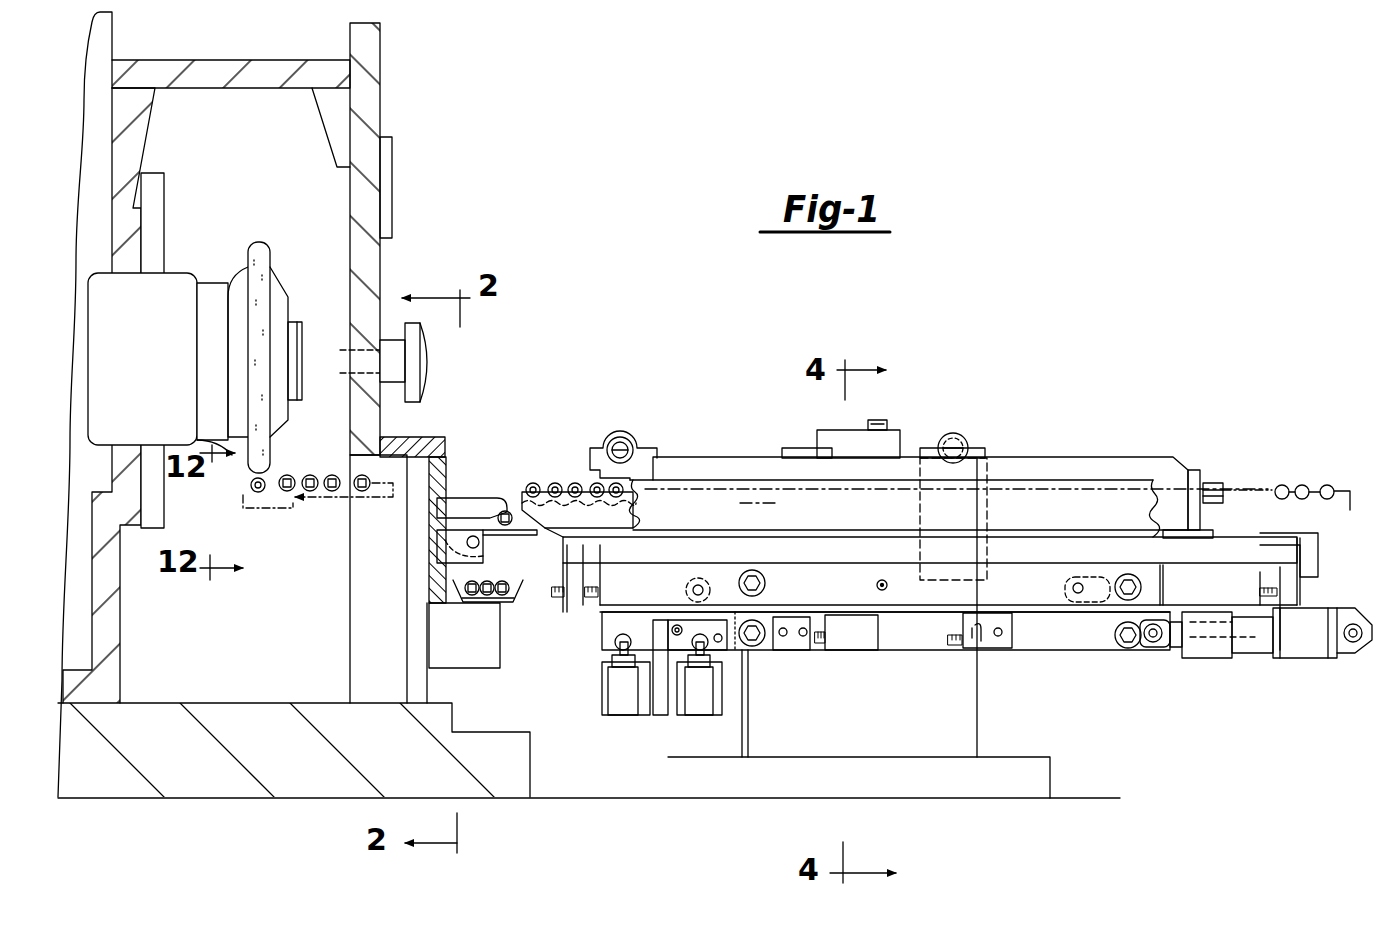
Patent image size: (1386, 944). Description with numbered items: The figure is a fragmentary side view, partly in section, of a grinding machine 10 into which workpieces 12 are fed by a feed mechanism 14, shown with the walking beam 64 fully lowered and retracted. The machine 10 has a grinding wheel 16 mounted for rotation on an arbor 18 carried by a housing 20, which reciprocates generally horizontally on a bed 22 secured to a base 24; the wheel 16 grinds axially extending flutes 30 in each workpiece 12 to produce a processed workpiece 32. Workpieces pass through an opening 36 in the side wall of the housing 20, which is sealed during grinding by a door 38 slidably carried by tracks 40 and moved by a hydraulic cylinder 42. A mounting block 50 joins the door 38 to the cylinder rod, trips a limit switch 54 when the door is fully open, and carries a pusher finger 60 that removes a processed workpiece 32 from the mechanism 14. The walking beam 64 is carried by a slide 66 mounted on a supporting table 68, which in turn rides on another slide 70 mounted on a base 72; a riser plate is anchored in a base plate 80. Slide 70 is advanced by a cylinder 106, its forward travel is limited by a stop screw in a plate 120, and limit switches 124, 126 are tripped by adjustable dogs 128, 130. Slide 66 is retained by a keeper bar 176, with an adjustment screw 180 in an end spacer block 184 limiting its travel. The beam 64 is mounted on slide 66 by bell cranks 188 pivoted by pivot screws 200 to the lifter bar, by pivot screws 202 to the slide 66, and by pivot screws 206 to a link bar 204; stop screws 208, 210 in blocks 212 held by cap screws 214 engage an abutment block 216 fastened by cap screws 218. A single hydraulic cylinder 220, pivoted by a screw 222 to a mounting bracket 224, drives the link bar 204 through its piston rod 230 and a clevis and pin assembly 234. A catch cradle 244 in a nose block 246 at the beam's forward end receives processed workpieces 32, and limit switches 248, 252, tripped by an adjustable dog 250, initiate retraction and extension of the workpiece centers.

The grinding machine 10 is at (425, 71).
The workpiece 12 is at (536, 483).
The feed mechanism 14 is at (960, 413).
The grinding wheel 16 is at (260, 243).
The arbor 18 is at (303, 326).
The housing 20 is at (215, 62).
The bed 22 is at (548, 770).
The base 24 is at (1118, 781).
The flutes 30 is at (280, 460).
The processed workpiece 32 is at (285, 461).
The opening 36 is at (418, 438).
The door 38 is at (458, 456).
The tracks 40 is at (462, 445).
The hydraulic cylinder 42 is at (496, 541).
The mounting block 50 is at (423, 568).
The limit switch 54 is at (497, 660).
The pusher finger 60 is at (478, 500).
The walking beam 64 is at (1355, 499).
The slide 66 is at (1169, 588).
The supporting table 68 is at (1320, 556).
The slide 70 is at (1084, 453).
The base 72 is at (740, 746).
The base plate 80 is at (1054, 772).
The cylinder 106 is at (1315, 535).
The plate 120 is at (1196, 468).
The limit switch 124 is at (624, 437).
The limit switch 126 is at (987, 452).
The adjustable dog 128 is at (790, 448).
The adjustable dog 130 is at (937, 447).
The keeper bar 176 is at (867, 593).
The adjustment screw 180 is at (1310, 592).
The end spacer block 184 is at (1305, 633).
The bell crank 188 is at (766, 590).
The pivot screw 200 is at (686, 590).
The pivot screw 202 is at (762, 571).
The link bar 204 is at (607, 622).
The pivot screw 206 is at (761, 650).
The adjustable stop screw 208 is at (820, 648).
The adjustable stop screw 210 is at (948, 640).
The block 212 is at (790, 648).
The cap screw 214 is at (975, 651).
The abutment block 216 is at (866, 643).
The cap screw 218 is at (890, 560).
The hydraulic cylinder 220 is at (1262, 654).
The screw 222 is at (1356, 642).
The mounting bracket 224 is at (1328, 607).
The piston rod 230 is at (1247, 638).
The clevis and pin assembly 234 is at (1180, 646).
The catch cradle 244 is at (252, 512).
The nose block 246 is at (243, 500).
The limit switch 248 is at (700, 707).
The adjustable dog 250 is at (738, 652).
The limit switch 252 is at (620, 707).